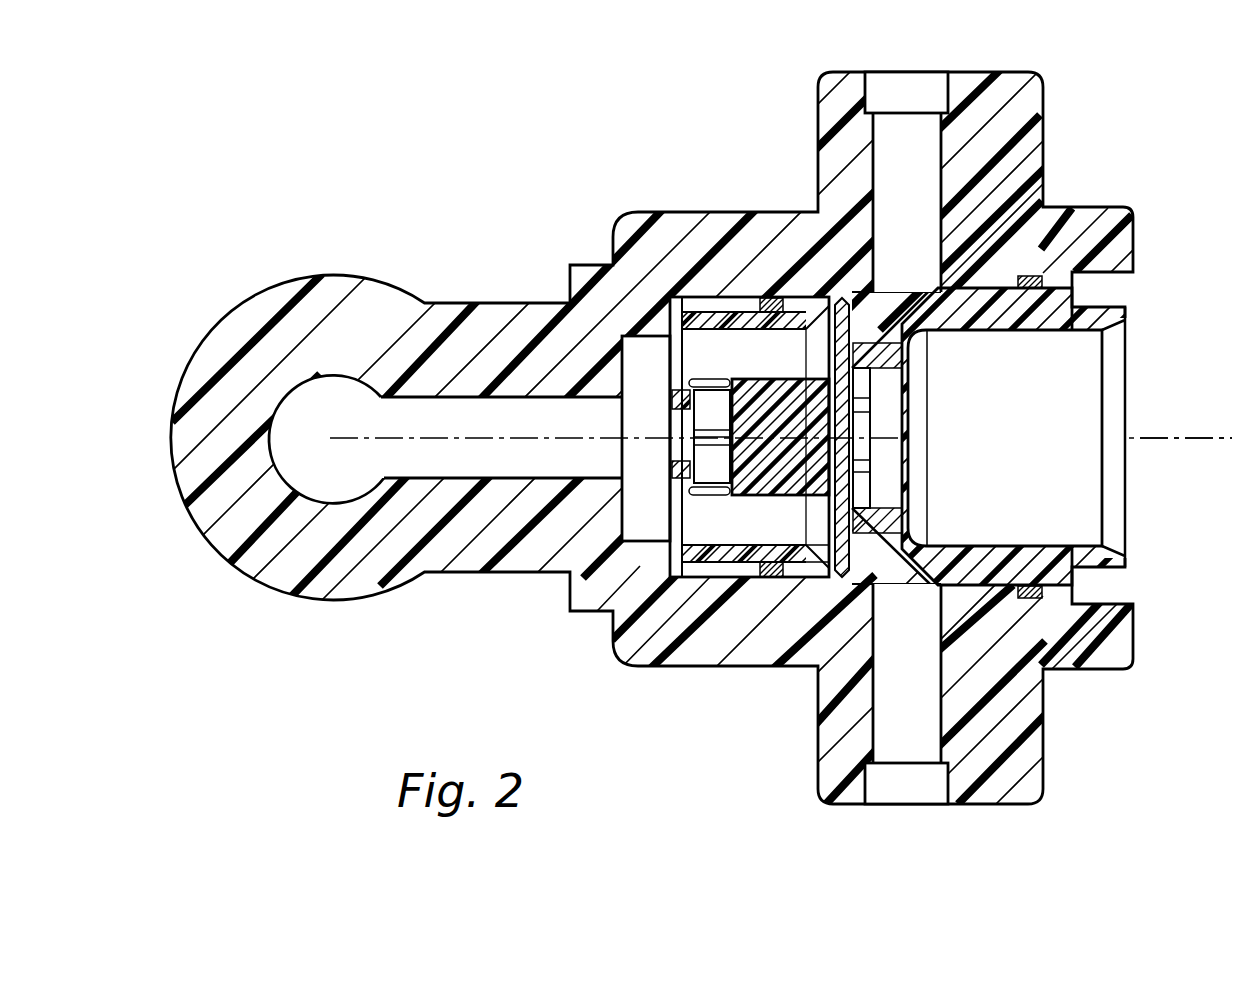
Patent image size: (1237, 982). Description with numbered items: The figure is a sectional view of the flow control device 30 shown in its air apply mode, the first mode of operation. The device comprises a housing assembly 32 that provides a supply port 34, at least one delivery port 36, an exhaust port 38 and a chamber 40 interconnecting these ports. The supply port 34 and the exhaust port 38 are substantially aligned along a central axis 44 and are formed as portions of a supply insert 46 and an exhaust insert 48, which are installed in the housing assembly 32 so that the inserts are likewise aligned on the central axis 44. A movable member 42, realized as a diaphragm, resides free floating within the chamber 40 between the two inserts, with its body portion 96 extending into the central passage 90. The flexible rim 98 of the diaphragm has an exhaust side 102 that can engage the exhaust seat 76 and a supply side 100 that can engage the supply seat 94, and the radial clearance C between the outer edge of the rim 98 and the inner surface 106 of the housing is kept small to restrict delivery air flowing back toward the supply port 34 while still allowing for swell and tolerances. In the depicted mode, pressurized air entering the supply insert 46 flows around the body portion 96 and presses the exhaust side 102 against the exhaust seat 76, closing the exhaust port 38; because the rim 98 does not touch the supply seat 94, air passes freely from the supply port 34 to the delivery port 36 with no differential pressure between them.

The flow control device 30 is at (257, 240).
The housing assembly 32 is at (472, 575).
The supply port 34 is at (853, 355).
The delivery port 36 is at (906, 105).
The exhaust port 38 is at (862, 492).
The chamber 40 is at (853, 424).
The movable member 42 is at (770, 375).
The central axis 44 is at (1175, 437).
The supply insert 46 is at (715, 564).
The exhaust insert 48 is at (723, 491).
The exhaust seat 76 is at (853, 393).
The central passage 90 is at (712, 412).
The supply seat 94 is at (843, 587).
The body portion 96 is at (712, 390).
The rim 98 is at (857, 310).
The supply side 100 is at (828, 528).
The exhaust side 102 is at (853, 467).
The inner surface 106 is at (812, 335).
The radial clearance C is at (853, 304).